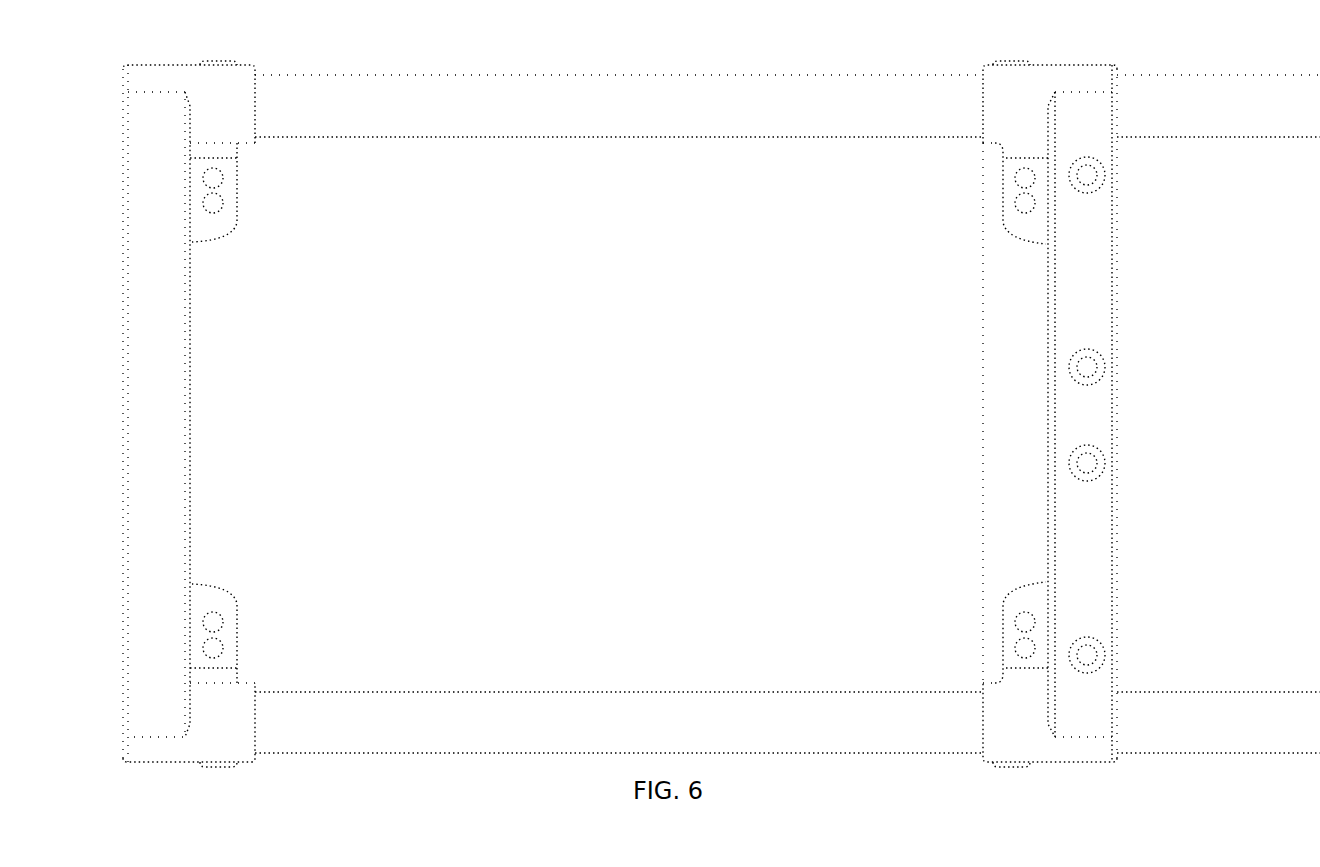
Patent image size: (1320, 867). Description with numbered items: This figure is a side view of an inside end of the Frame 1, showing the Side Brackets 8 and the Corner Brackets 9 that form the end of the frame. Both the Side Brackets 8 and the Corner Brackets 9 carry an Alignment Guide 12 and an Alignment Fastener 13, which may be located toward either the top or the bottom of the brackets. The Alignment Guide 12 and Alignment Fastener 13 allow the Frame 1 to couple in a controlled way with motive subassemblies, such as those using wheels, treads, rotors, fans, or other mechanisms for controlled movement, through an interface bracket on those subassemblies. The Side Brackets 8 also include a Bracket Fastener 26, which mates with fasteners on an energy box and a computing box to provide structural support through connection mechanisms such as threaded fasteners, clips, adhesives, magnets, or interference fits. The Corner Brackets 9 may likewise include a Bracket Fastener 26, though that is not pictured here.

The Frame 1 is at (599, 46).
The Side Bracket 8 is at (1096, 312).
The Corner Bracket 9 is at (166, 309).
The Alignment Guide 12 is at (228, 186).
The Alignment Fastener 13 is at (224, 208).
The Bracket Fastener 26 is at (1096, 171).